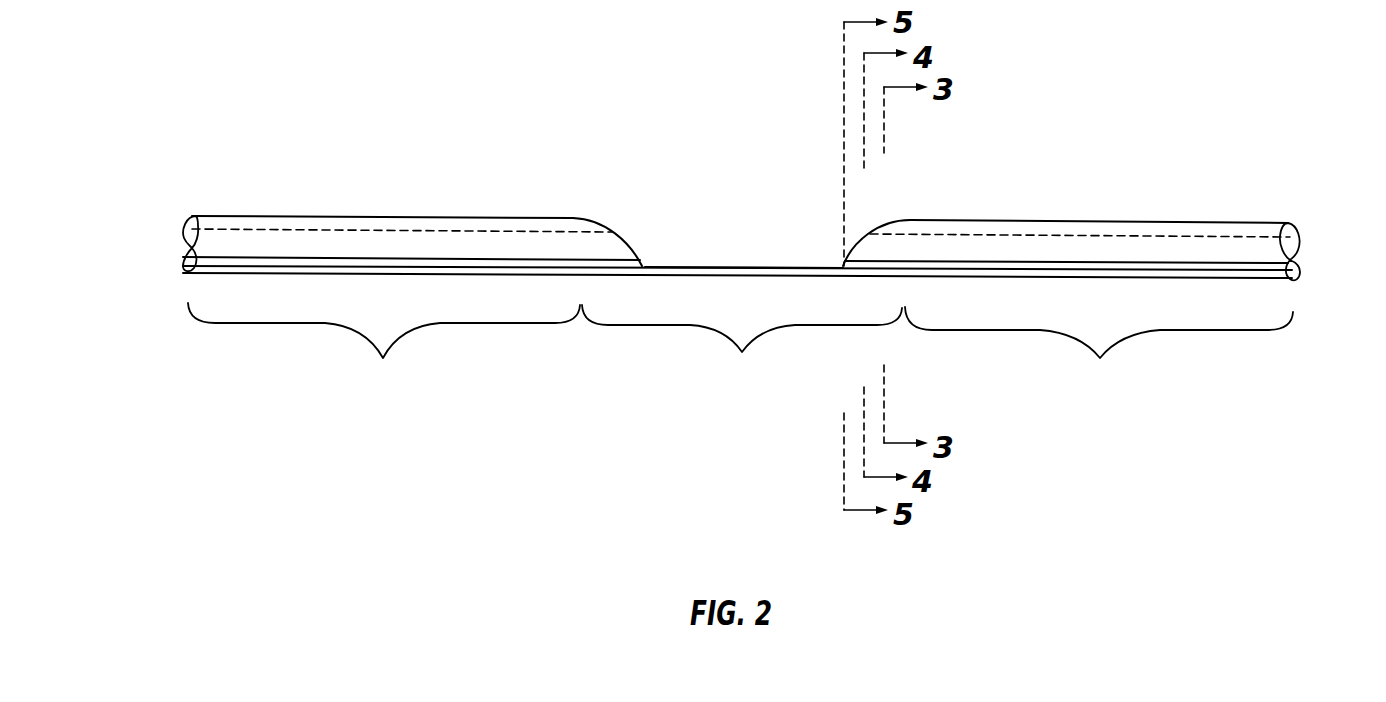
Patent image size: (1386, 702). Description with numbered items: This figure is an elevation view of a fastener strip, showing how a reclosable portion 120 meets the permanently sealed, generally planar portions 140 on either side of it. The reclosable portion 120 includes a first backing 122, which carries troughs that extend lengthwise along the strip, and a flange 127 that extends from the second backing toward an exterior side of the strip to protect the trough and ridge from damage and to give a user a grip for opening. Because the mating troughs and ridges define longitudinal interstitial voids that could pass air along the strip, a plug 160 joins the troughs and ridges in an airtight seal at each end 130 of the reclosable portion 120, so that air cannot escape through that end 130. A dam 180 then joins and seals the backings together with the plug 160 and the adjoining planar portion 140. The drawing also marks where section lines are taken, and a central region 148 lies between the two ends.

The reclosable portion 120 is at (384, 352).
The first backing 122 is at (190, 272).
The flange 127 is at (185, 220).
The end 130 is at (562, 243).
The generally planar portion 140 is at (937, 355).
The central slot 148 is at (728, 272).
The plug 160 is at (636, 215).
The dam 180 is at (663, 218).